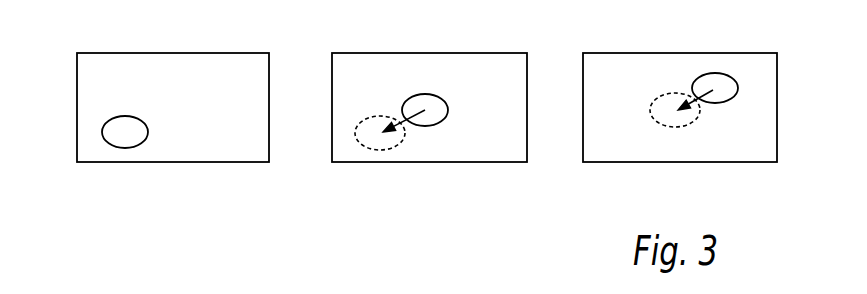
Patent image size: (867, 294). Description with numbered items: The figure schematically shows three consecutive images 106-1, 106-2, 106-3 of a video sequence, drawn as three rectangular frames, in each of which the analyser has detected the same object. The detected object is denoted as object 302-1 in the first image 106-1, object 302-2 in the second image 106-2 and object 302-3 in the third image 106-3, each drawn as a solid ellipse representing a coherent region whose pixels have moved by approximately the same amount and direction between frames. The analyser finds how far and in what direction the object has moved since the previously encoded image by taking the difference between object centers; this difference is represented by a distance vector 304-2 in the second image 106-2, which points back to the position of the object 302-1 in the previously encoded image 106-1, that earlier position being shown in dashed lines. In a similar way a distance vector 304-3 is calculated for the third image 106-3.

The first image of the video sequence 106-1 is at (116, 52).
The detected object in the first image 302-1 is at (102, 132).
The second image of the video sequence 106-2 is at (410, 52).
The detected object in the second image 302-2 is at (409, 98).
The distance vector for the second image 304-2 is at (424, 113).
The third image of the video sequence 106-3 is at (616, 52).
The detected object in the third image 302-3 is at (707, 72).
The distance vector for the third image 304-3 is at (713, 92).